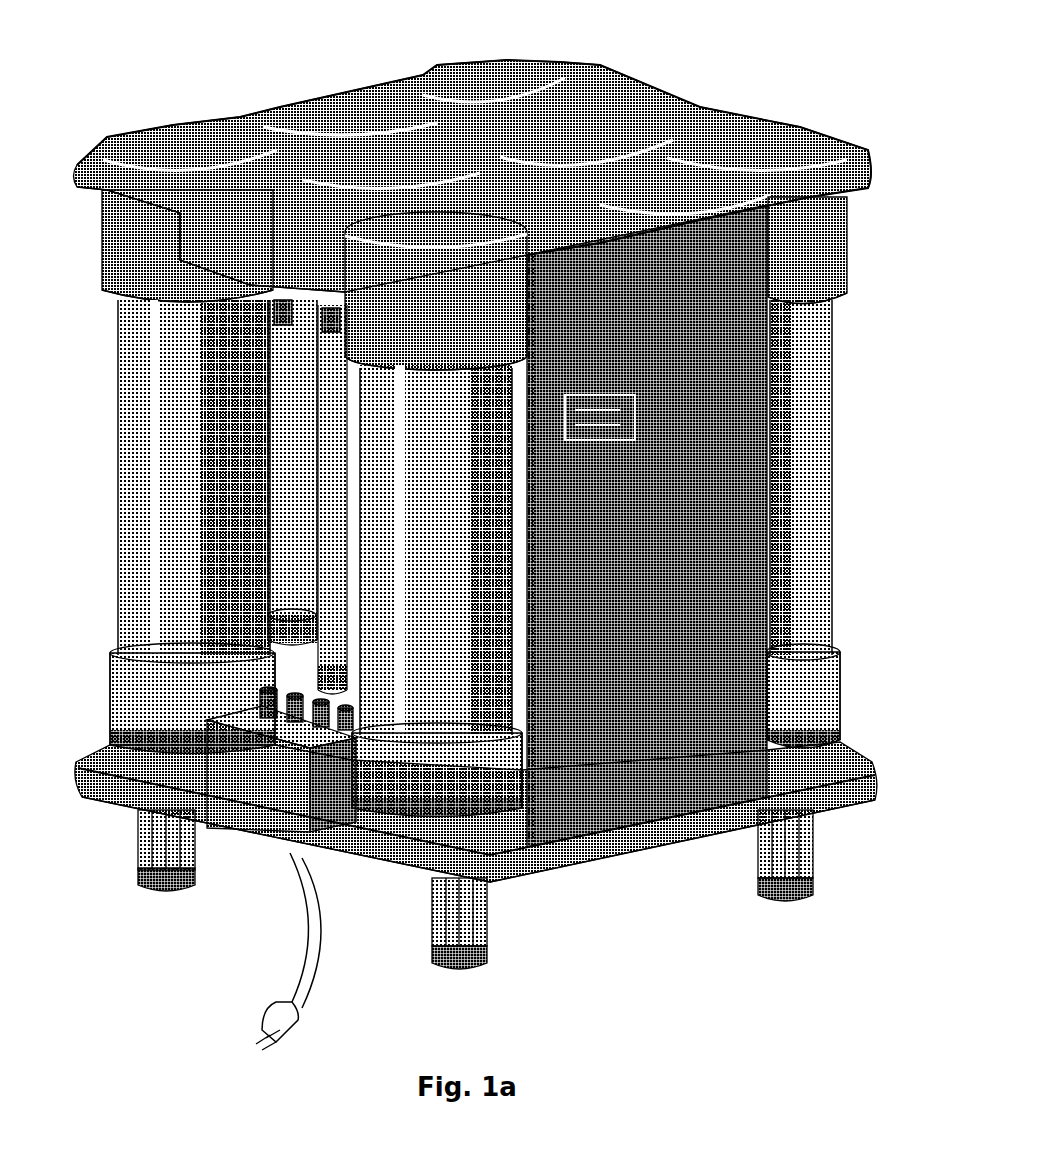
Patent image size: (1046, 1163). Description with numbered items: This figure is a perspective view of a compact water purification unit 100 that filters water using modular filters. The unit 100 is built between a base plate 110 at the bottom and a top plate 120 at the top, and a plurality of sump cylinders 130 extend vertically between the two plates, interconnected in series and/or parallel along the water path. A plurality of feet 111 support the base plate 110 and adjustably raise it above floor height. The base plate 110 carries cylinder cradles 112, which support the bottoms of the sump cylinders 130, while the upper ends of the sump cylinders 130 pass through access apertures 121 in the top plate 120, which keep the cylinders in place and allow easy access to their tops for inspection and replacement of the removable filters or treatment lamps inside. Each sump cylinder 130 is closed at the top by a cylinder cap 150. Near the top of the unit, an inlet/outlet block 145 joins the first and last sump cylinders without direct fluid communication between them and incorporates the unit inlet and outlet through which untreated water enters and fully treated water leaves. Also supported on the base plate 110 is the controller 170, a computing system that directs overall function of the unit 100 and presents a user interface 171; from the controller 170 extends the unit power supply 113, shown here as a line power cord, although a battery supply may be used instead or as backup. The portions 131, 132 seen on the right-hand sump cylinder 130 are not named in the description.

The compact water purification unit 100 is at (700, 940).
The base plate 110 is at (847, 803).
The feet 111 is at (488, 930).
The cylinder cradles 112 is at (100, 755).
The unit power supply 113 is at (322, 965).
The top plate 120 is at (670, 97).
The access apertures 121 is at (100, 150).
The sump cylinders 130 is at (807, 467).
The lower collar 131 is at (820, 710).
The upper cap 132 is at (827, 250).
The inlet/outlet block 145 is at (263, 250).
The cylinder cap 150 is at (315, 97).
The controller 170 is at (237, 790).
The user interface 171 is at (258, 695).